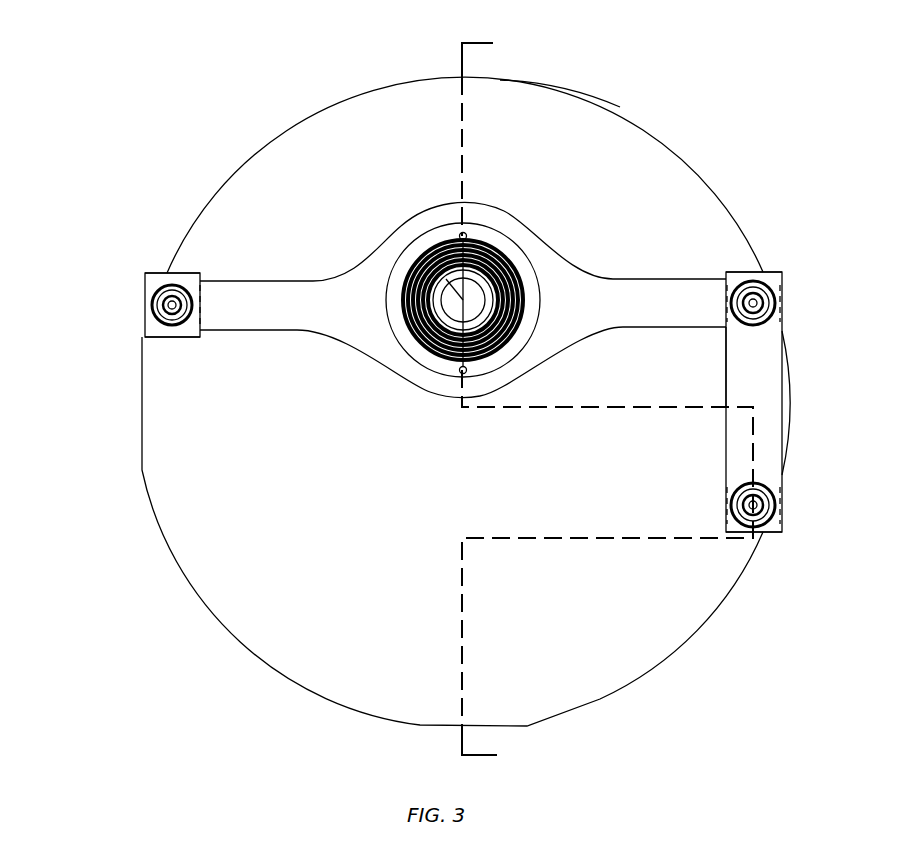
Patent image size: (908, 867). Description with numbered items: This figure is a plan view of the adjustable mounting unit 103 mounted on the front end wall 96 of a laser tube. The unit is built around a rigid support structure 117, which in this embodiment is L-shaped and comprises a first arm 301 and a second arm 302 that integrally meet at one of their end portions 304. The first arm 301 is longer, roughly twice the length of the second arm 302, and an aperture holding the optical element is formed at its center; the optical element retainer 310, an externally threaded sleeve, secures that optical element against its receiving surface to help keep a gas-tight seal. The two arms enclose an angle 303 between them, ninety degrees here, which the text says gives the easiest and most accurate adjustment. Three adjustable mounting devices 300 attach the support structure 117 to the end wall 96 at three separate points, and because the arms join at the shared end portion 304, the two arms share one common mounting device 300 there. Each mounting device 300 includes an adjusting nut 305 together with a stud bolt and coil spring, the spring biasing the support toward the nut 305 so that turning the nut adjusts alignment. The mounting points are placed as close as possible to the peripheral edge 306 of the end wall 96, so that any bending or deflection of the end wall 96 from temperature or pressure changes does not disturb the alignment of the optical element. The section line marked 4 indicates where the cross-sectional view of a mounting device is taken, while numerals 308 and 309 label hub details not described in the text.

The section line 4- 4 is at (607, 400).
The end wall 96 is at (618, 160).
The adjustable mounting unit 103 is at (549, 215).
The rigid support structure 117 is at (268, 318).
The adjustable mounting device 300 is at (138, 323).
The first arm 301 is at (595, 275).
The second arm 302 is at (762, 395).
The enclosed angle 303 is at (670, 330).
The end portion 304 is at (163, 273).
The adjusting nut 305 is at (160, 299).
The peripheral edge 306 is at (557, 90).
The hub housing 308 is at (486, 221).
The bearing 309 is at (421, 262).
The optical element retainer 310 is at (398, 302).